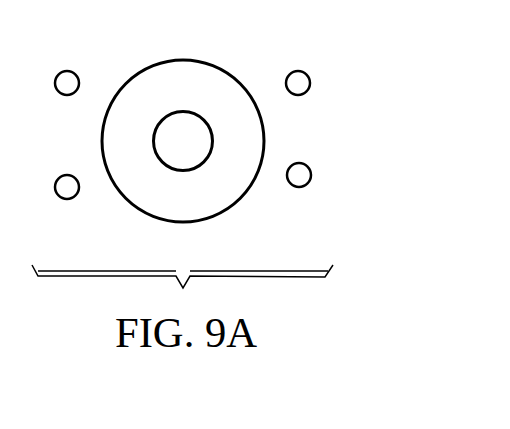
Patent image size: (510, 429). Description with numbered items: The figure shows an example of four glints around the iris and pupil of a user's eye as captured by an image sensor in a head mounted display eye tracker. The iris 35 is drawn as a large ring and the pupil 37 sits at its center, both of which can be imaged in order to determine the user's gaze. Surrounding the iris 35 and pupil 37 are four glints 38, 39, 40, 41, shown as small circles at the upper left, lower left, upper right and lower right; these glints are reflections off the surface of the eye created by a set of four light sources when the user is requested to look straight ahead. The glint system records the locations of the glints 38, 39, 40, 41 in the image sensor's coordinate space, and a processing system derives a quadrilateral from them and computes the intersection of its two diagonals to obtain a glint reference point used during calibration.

The iris 35 is at (178, 70).
The pupil 37 is at (192, 128).
The glint 38 is at (65, 71).
The glint 39 is at (62, 199).
The glint 40 is at (301, 71).
The glint 41 is at (303, 187).